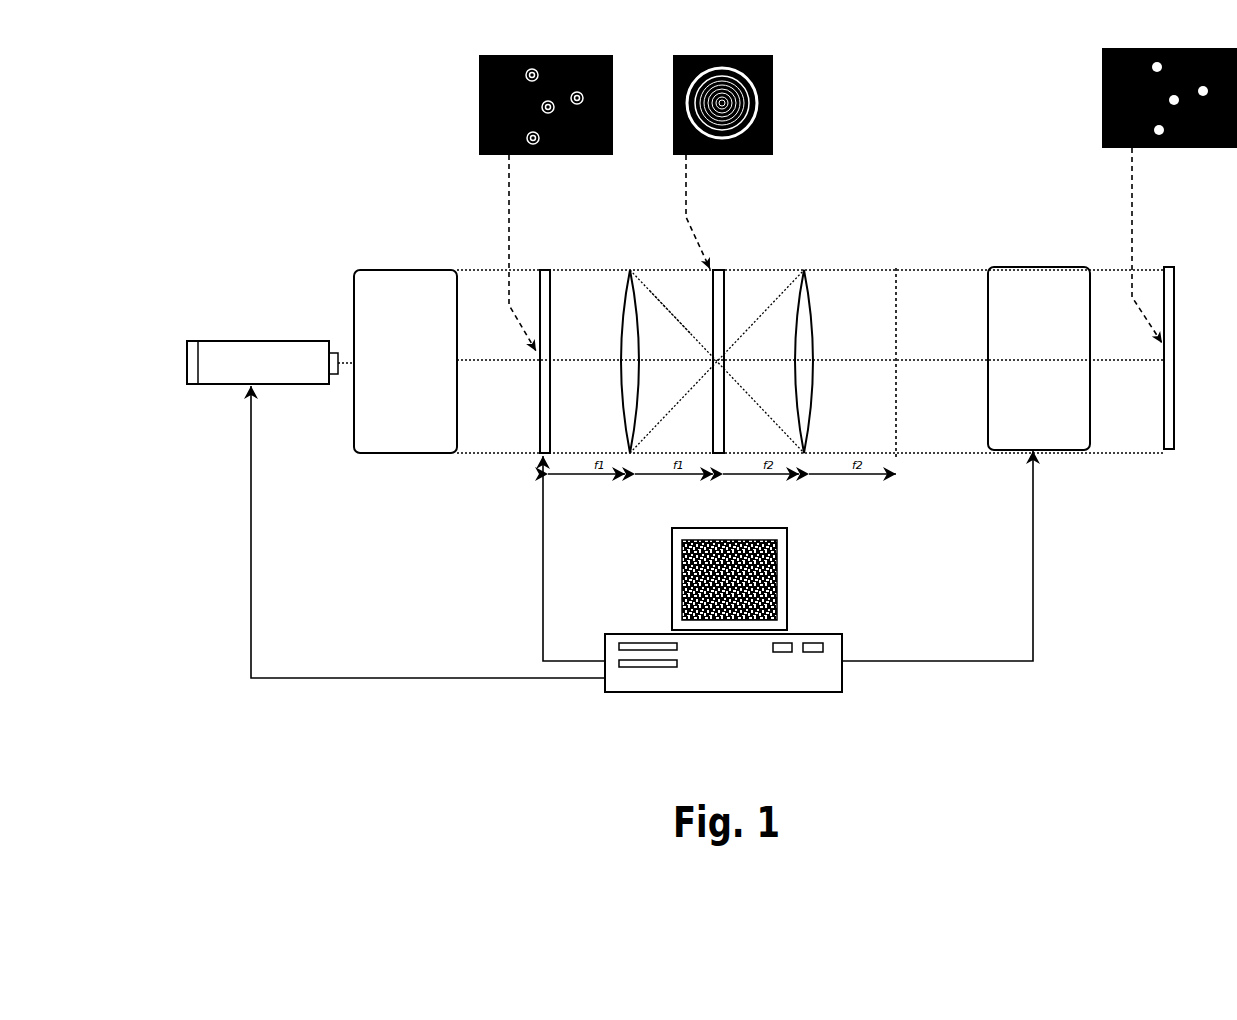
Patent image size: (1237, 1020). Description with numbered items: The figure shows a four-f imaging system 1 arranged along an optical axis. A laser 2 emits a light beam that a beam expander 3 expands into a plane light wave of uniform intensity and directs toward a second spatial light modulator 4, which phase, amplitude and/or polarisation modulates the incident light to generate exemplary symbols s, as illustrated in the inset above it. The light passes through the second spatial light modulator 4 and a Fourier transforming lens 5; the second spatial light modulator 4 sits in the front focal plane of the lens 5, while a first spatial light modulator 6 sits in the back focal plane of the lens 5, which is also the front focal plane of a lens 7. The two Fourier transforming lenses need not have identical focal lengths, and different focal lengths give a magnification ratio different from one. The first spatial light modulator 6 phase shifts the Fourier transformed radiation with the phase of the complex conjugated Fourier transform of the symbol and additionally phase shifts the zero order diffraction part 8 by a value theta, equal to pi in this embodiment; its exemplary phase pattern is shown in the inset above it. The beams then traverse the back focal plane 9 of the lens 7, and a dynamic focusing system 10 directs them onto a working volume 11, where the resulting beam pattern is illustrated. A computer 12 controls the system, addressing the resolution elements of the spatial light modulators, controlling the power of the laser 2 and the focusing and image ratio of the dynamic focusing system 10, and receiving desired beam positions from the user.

The 4f imaging system 1 is at (953, 218).
The laser 2 is at (238, 352).
The beam expander 3 is at (391, 278).
The second spatial light modulator 4 is at (540, 278).
The Fourier transforming lens 5 is at (630, 278).
The first spatial light modulator 6 is at (720, 277).
The lens 7 is at (806, 277).
The zero order diffraction part 8 is at (665, 330).
The back focal plane 9 is at (896, 283).
The dynamic focusing system 10 is at (1038, 283).
The working volume 11 is at (1168, 290).
The computer 12 is at (835, 640).